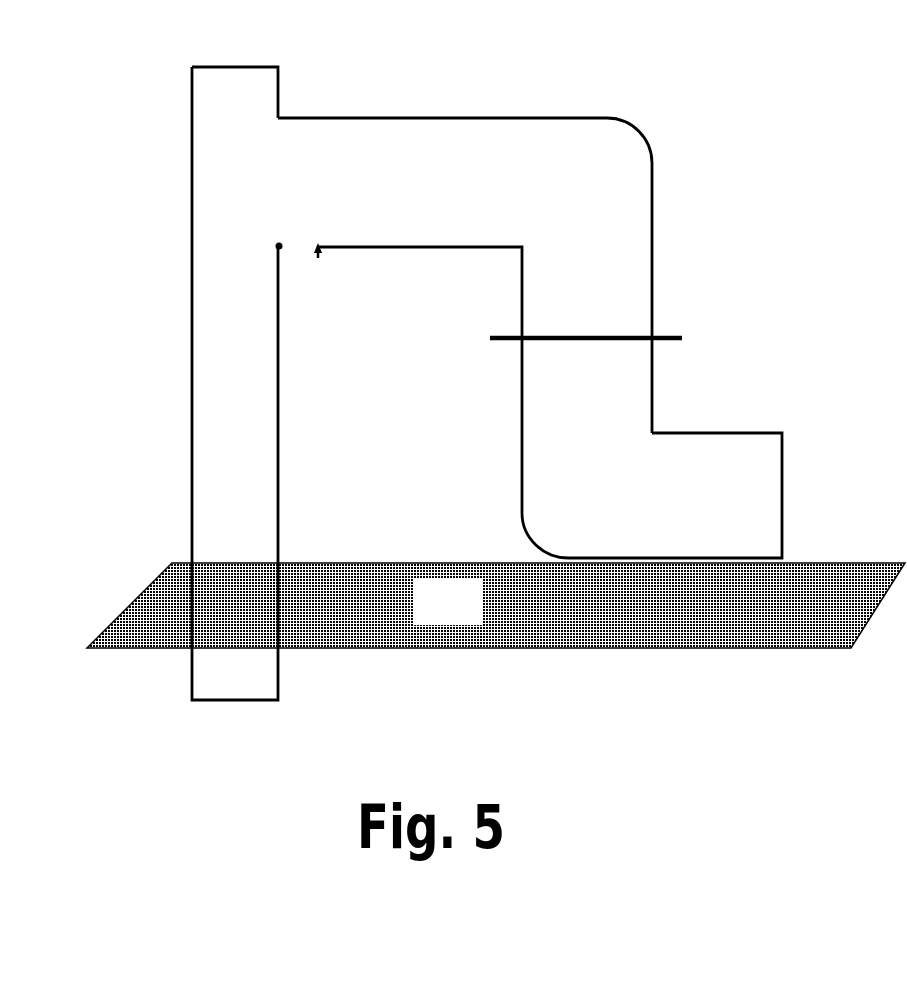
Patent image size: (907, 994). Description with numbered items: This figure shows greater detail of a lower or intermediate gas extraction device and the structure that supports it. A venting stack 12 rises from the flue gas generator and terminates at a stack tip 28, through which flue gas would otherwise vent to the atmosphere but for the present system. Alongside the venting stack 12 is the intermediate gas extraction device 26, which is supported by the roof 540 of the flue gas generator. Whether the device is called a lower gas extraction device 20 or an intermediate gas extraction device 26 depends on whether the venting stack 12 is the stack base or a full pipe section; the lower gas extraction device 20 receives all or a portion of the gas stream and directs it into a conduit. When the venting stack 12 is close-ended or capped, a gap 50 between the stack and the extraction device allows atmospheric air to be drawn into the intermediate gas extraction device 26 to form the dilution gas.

The venting stack 12 is at (178, 378).
The stack tip 28 is at (188, 50).
The intermediate gas extraction device 26 is at (608, 255).
The lower gas extraction device 20 is at (742, 462).
The gap 50 is at (300, 263).
The roof 540 is at (476, 620).